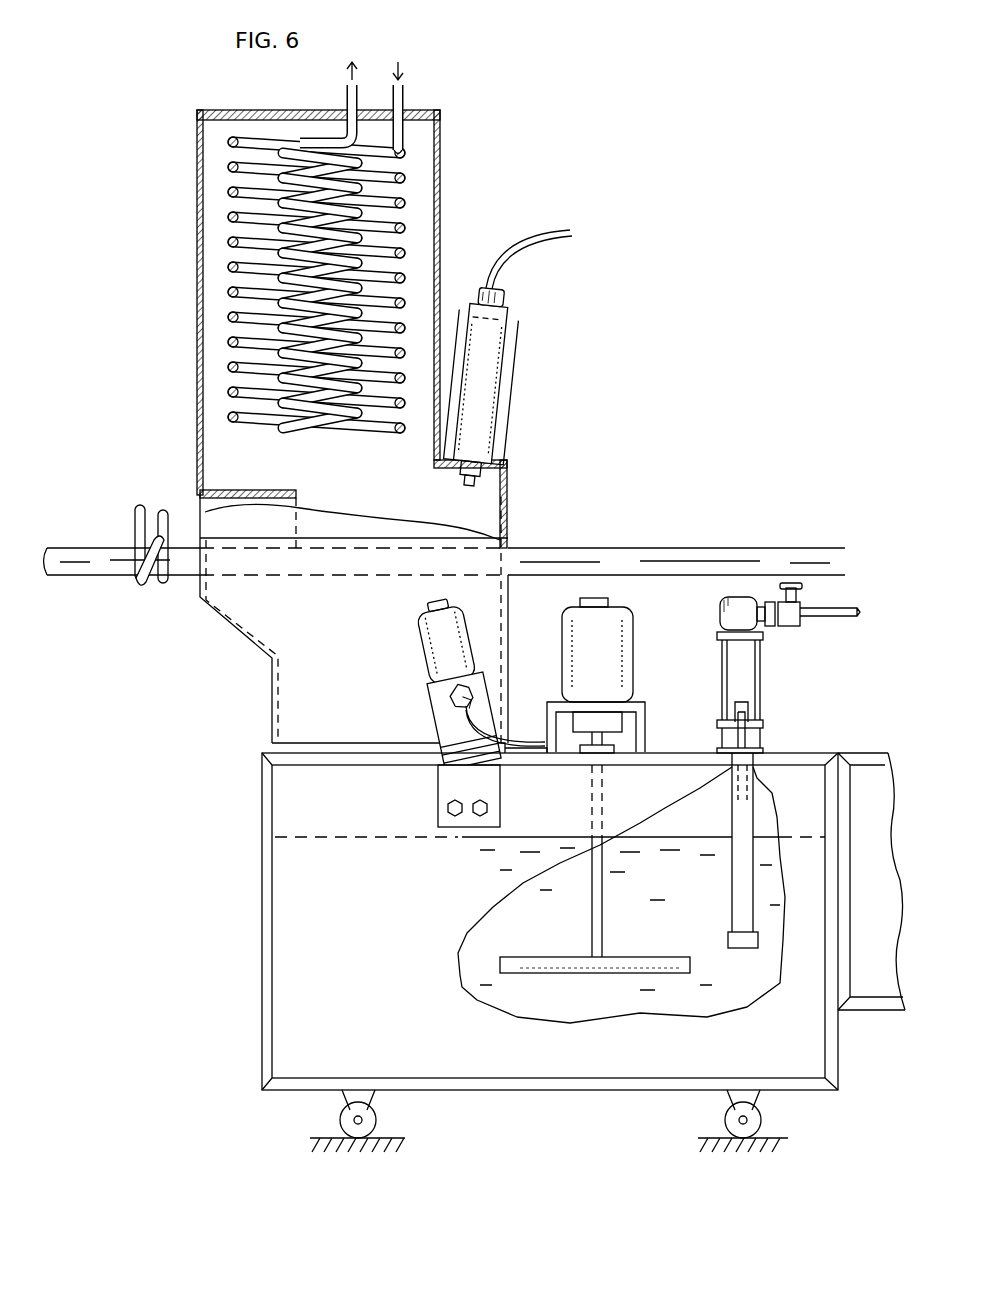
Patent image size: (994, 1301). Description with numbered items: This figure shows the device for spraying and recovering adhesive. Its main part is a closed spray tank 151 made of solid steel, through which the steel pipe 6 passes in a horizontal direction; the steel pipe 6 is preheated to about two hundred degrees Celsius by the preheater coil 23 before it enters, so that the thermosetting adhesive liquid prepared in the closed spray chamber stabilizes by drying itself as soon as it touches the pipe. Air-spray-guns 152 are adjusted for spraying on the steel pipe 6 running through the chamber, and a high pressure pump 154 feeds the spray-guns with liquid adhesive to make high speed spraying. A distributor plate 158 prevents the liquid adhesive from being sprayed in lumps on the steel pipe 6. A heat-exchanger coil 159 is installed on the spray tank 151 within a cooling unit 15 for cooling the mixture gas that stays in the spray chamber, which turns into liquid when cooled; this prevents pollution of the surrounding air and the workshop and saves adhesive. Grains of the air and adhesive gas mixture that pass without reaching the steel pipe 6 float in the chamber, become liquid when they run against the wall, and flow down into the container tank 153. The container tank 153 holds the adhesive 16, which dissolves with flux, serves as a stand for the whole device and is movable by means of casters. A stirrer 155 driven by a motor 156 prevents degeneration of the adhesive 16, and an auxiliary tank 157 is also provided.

The steel pipe 6 is at (655, 548).
The cooling unit 15 is at (440, 120).
The adhesive 16 is at (696, 837).
The preheater coil 23 is at (143, 506).
The spray tank 151 is at (197, 293).
The air-spray-gun 152 is at (517, 340).
The container tank 153 is at (680, 1063).
The high pressure pump 154 is at (750, 659).
The stirrer 155 is at (573, 957).
The motor 156 is at (622, 658).
The auxiliary tank 157 is at (895, 876).
The distributor plate 158 is at (262, 490).
The heat-exchanger (coil) 159 is at (233, 143).